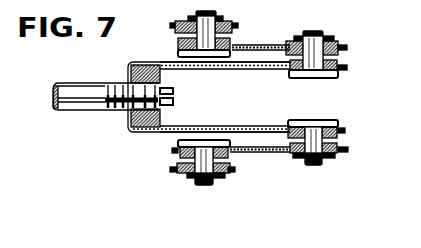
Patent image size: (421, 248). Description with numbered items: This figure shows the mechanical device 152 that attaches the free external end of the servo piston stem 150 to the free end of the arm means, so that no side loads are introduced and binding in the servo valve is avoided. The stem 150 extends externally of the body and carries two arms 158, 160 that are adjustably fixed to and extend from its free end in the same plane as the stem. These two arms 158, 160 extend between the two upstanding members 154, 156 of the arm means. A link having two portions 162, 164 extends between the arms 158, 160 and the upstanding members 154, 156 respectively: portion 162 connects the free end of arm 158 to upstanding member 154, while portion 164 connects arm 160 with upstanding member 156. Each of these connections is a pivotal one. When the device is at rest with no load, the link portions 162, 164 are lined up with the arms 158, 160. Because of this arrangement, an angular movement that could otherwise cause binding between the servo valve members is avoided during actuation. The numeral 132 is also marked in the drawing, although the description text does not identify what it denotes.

The bracket 132 is at (116, 22).
The stem 150 is at (88, 112).
The mechanical device 152 is at (257, 156).
The upstanding member 154 is at (238, 27).
The upstanding member 156 is at (226, 174).
The arm 158 is at (235, 70).
The arm 160 is at (213, 127).
The link portion 162 is at (270, 45).
The link portion 164 is at (282, 154).